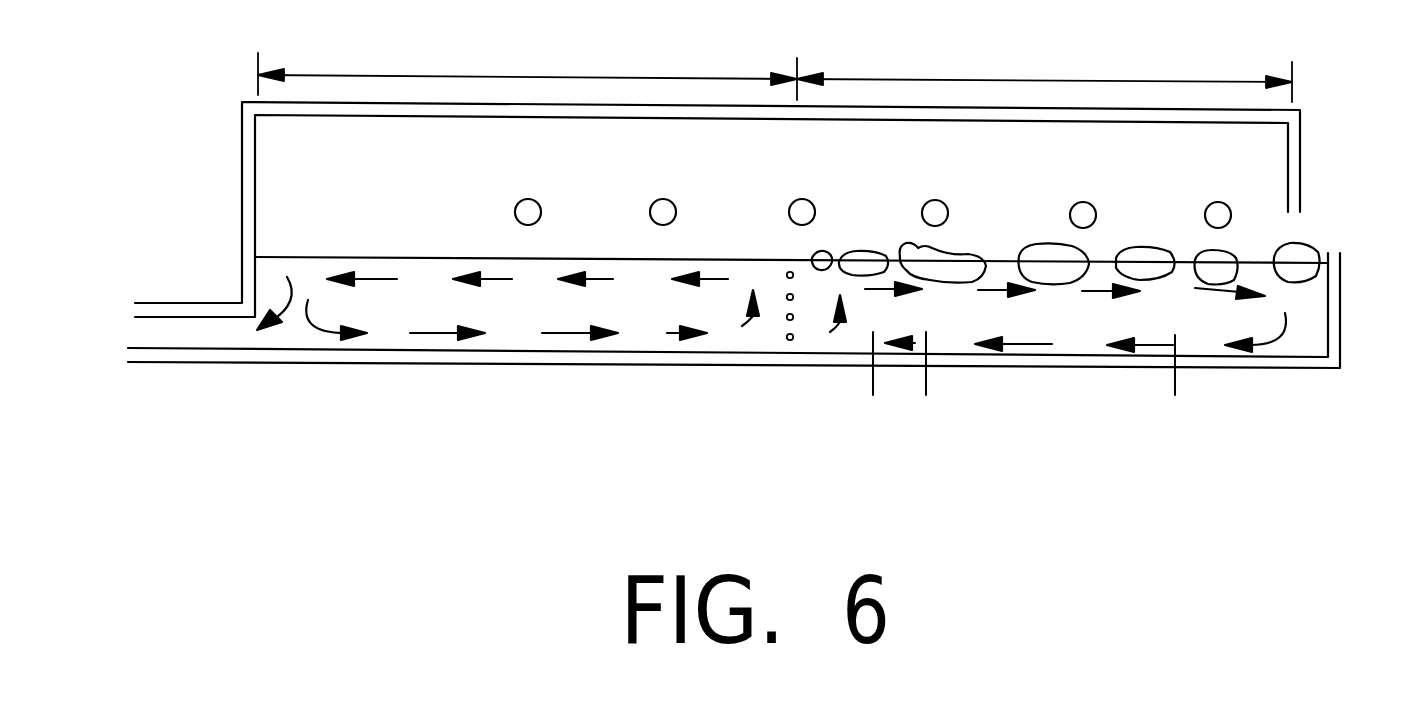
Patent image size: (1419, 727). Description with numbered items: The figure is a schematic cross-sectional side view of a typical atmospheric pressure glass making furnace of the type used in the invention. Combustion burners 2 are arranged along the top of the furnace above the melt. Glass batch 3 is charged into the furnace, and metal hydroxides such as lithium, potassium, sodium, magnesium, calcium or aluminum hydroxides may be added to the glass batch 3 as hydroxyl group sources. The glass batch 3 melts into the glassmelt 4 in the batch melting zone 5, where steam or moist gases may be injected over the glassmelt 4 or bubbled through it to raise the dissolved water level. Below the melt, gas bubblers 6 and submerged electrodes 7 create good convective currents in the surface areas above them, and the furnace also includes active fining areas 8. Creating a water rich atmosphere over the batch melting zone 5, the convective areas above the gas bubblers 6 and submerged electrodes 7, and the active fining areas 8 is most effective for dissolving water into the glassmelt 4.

The combustion burners 2 is at (933, 212).
The glass batch 3 is at (1213, 270).
The glassmelt 4 is at (1123, 313).
The batch melting zone 5 is at (1044, 69).
The gas bubblers 6 is at (788, 318).
The submerged electrodes 7 is at (1172, 402).
The active fining areas 8 is at (527, 67).